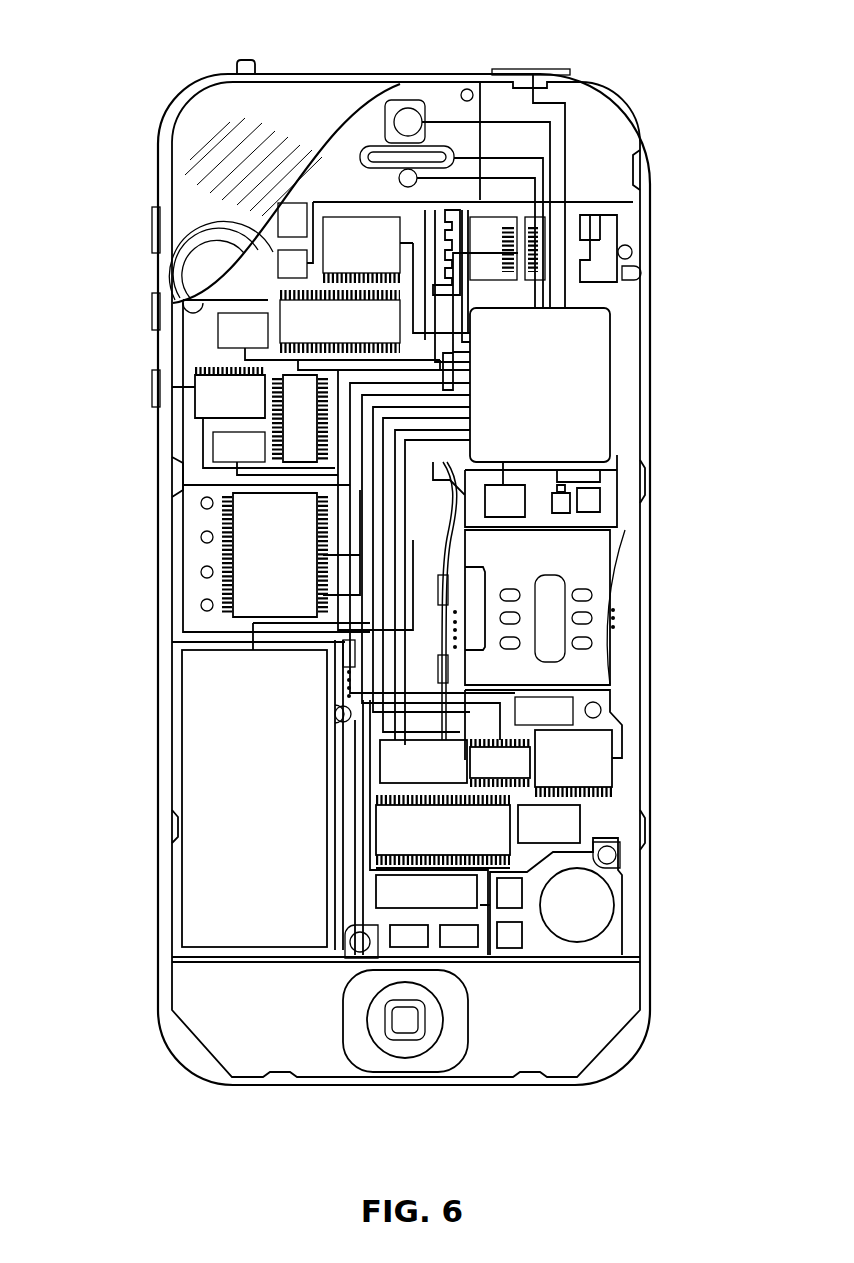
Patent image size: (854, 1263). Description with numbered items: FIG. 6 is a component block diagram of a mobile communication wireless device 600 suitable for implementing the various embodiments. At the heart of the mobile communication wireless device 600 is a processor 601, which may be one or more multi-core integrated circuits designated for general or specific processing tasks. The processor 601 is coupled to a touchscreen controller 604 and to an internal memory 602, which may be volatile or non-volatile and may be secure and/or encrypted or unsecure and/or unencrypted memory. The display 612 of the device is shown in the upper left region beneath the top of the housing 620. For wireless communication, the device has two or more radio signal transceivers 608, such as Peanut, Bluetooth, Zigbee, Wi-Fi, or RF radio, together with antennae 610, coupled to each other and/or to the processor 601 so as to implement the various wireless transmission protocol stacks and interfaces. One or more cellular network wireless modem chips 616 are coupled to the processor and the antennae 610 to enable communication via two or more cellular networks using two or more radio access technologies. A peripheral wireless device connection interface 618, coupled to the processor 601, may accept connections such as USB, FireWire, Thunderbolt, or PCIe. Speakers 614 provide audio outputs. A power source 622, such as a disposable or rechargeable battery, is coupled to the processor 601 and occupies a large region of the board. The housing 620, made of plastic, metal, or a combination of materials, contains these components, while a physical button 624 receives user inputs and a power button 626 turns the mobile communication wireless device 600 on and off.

The mobile communication wireless device 600 is at (127, 88).
The processor 601 is at (540, 385).
The internal memory 602 is at (340, 321).
The touchscreen controller 604 is at (361, 247).
The radio signal transceivers 608 is at (543, 237).
The antennae 610 is at (607, 263).
The display 612 is at (195, 160).
The speakers 614 is at (365, 145).
The cellular network wireless modem chip 616 is at (443, 830).
The peripheral wireless device connection interface 618 is at (426, 891).
The housing 620 is at (648, 982).
The power source 622 is at (271, 786).
The physical button 624 is at (410, 1030).
The power button 626 is at (535, 70).